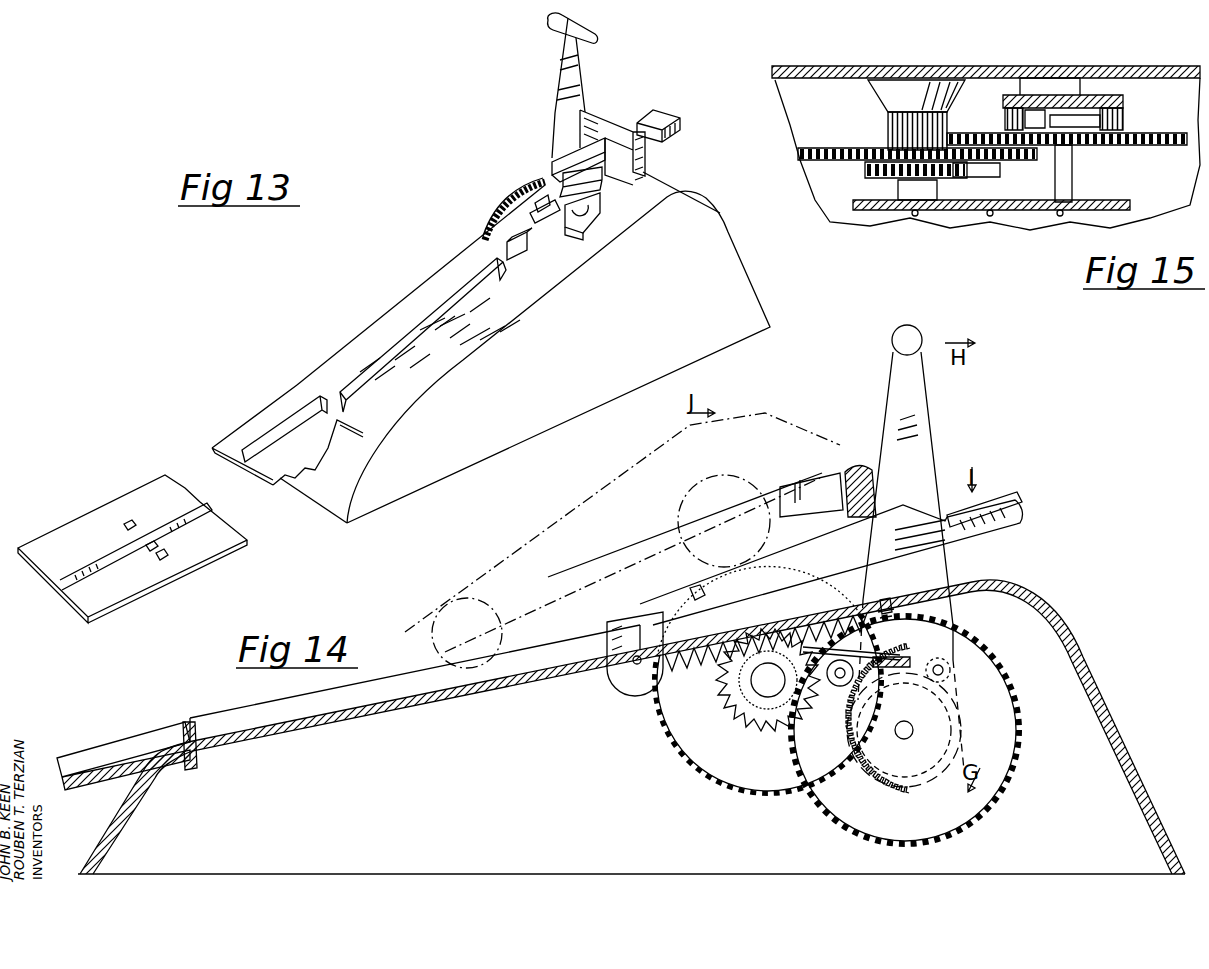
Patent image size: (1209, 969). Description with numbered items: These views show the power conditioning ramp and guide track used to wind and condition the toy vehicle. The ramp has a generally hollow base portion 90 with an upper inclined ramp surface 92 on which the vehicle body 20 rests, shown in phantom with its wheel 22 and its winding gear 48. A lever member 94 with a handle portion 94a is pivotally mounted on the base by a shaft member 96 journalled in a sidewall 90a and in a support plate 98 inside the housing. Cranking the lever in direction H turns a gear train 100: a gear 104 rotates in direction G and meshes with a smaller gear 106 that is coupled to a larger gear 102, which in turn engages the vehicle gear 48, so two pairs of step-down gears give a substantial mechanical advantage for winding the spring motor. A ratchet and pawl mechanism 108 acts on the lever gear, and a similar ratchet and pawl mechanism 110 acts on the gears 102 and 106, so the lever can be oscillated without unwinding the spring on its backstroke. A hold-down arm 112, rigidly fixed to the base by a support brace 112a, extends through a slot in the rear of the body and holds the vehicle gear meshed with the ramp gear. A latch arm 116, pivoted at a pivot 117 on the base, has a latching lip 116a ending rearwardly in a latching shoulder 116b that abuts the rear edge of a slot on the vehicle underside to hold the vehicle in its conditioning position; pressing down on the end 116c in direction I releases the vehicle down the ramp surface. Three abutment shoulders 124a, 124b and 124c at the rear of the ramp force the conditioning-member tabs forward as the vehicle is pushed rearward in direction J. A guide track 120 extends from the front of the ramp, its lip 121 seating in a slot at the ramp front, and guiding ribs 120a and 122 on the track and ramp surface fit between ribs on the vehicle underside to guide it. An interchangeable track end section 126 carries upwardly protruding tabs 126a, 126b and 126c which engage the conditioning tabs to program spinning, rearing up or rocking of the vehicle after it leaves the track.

In FIG. 14, the vehicle body 20 is at (545, 522).
In FIG. 14, the wheel 22 is at (433, 655).
In FIG. 14, the gear 48 is at (738, 475).
In FIG. 13, the base portion 90 is at (722, 220).
In FIG. 14, the sidewall 90a is at (458, 772).
In FIG. 15, the sidewall 90a is at (1135, 84).
In FIG. 13, the upper inclined ramp surface 92 is at (478, 330).
In FIG. 14, the upper inclined ramp surface 92 is at (315, 722).
In FIG. 13, the lever member 94 is at (558, 48).
In FIG. 14, the lever member 94 is at (924, 410).
In FIG. 15, the lever member 94 is at (1040, 93).
In FIG. 13, the handle portion 94a is at (598, 30).
In FIG. 14, the handle portion 94a is at (893, 338).
In FIG. 14, the shaft member 96 is at (905, 739).
In FIG. 15, the shaft member 96 is at (1070, 178).
In FIG. 15, the support plate 98 is at (1018, 212).
In FIG. 14, the gear train 100 is at (985, 637).
In FIG. 13, the gear 102 is at (510, 215).
In FIG. 14, the gear 102 is at (660, 740).
In FIG. 15, the gear 102 is at (845, 150).
In FIG. 14, the gear 104 is at (1010, 720).
In FIG. 15, the gear 104 is at (1150, 146).
In FIG. 14, the smaller gear 106 is at (745, 705).
In FIG. 15, the smaller gear 106 is at (890, 126).
In FIG. 14, the ratchet and pawl mechanism 108 is at (940, 689).
In FIG. 15, the ratchet and pawl mechanism 108 is at (1118, 120).
In FIG. 14, the ratchet and pawl mechanism 110 is at (821, 706).
In FIG. 15, the ratchet and pawl mechanism 110 is at (956, 186).
In FIG. 13, the hold-down arm 112 is at (600, 118).
In FIG. 14, the hold-down arm 112 is at (800, 485).
In FIG. 13, the support brace 112a is at (620, 128).
In FIG. 14, the support brace 112a is at (856, 472).
In FIG. 13, the latch arm 116 is at (605, 178).
In FIG. 14, the latch arm 116 is at (905, 545).
In FIG. 13, the latching lip 116a is at (500, 240).
In FIG. 14, the latching lip 116a is at (718, 572).
In FIG. 13, the latching shoulder 116b is at (552, 200).
In FIG. 14, the latching shoulder 116b is at (779, 626).
In FIG. 13, the end of latch arm 116c is at (668, 118).
In FIG. 14, the end of latch arm 116c is at (1008, 495).
In FIG. 14, the pivot 117 is at (625, 662).
In FIG. 13, the guide track 120 is at (217, 433).
In FIG. 13, the guiding rib 120a is at (285, 410).
In FIG. 14, the guiding rib 120a is at (128, 740).
In FIG. 14, the lip 121 is at (190, 765).
In FIG. 13, the guiding rib 122 is at (425, 300).
In FIG. 14, the guiding rib 122 is at (250, 705).
In FIG. 13, the abutment shoulder 124a is at (585, 215).
In FIG. 13, the abutment shoulder 124b is at (567, 235).
In FIG. 13, the abutment shoulder 124c is at (540, 200).
In FIG. 13, the track plate 126 is at (50, 530).
In FIG. 13, the tab 126a is at (163, 557).
In FIG. 13, the tab 126b is at (150, 552).
In FIG. 13, the tab 126c is at (128, 522).